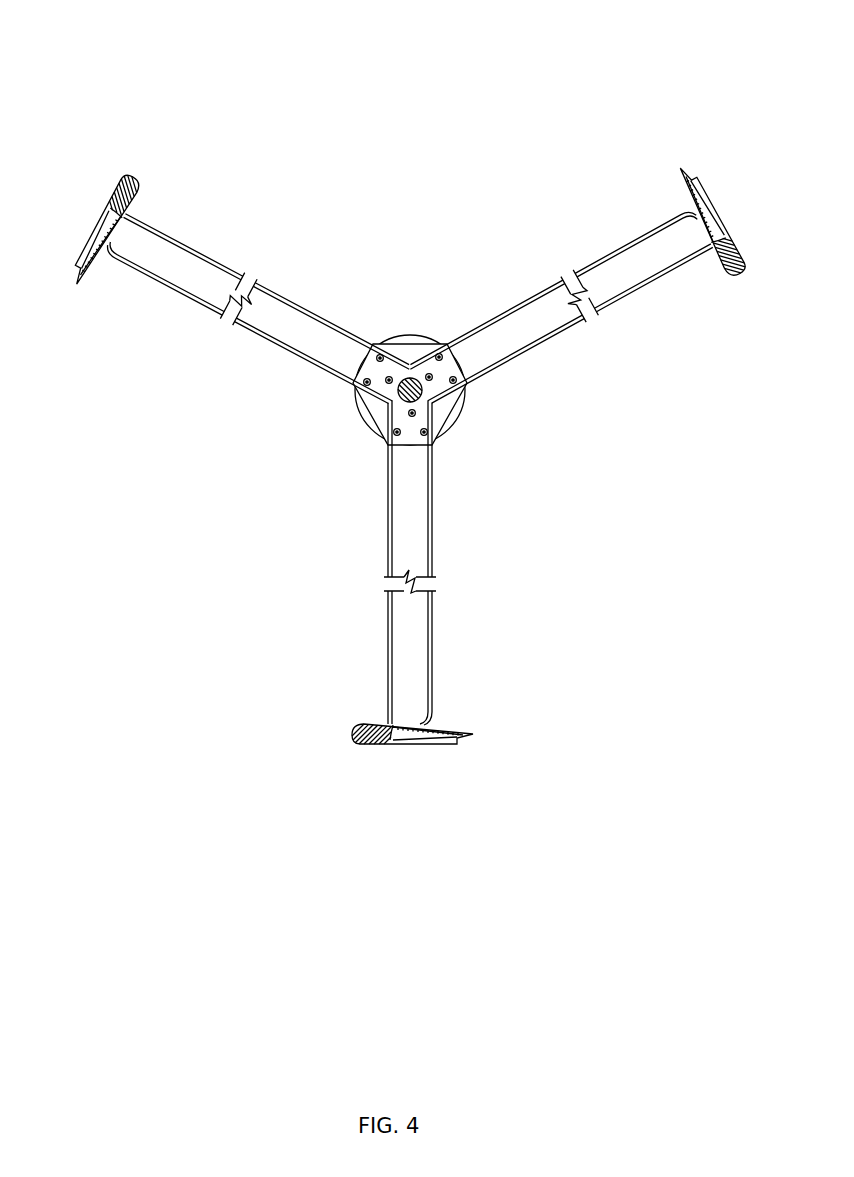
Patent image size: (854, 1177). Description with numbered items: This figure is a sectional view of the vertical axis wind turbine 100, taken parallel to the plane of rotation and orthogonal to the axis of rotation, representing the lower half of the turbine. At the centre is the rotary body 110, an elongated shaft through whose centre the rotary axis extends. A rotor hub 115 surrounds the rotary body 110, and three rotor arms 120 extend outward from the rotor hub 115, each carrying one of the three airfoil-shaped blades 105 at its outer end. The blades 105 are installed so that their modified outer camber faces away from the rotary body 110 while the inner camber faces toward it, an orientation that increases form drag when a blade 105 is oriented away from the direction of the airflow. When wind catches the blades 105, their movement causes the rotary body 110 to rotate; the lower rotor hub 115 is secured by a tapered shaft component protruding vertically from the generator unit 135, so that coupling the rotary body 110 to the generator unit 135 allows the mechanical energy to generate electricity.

The vertical axis wind turbine 100 is at (697, 112).
The blade 105 is at (111, 195).
The rotary body 110 is at (403, 397).
The rotor hub 115 is at (392, 368).
The rotor arm 120 is at (273, 300).
The generator unit 135 is at (449, 411).